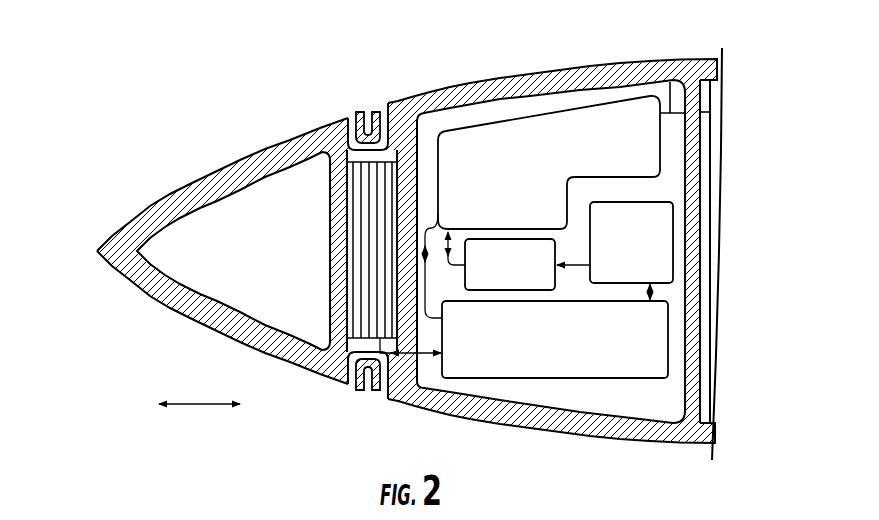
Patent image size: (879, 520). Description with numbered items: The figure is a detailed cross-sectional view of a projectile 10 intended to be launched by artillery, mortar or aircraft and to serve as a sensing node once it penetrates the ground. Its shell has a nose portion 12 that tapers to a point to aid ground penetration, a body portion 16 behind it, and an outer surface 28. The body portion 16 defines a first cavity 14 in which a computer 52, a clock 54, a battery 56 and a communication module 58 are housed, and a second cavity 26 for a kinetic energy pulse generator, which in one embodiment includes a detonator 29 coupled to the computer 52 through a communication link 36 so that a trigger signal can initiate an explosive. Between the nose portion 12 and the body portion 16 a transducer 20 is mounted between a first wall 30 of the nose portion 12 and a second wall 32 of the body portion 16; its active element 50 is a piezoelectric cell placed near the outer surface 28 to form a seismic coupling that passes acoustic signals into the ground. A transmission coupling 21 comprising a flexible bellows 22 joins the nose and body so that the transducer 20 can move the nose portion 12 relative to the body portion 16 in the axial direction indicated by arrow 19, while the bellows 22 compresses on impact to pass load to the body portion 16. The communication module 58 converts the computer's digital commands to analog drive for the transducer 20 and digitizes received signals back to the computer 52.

The projectile 10 is at (174, 142).
The nose portion 12 is at (163, 305).
The first cavity 14 is at (660, 412).
The body portion 16 is at (542, 433).
The arrow 19 is at (197, 407).
The transducer 20 is at (377, 265).
The transmission coupling 21 is at (368, 400).
The bellows 22 is at (376, 106).
The second cavity 26 is at (710, 383).
The outer surface 28 is at (273, 140).
The detonator 29 is at (712, 118).
The first wall 30 is at (327, 312).
The second wall 32 is at (413, 412).
The communication link 36 is at (672, 82).
The active element 50 is at (356, 192).
The computer 52 is at (625, 108).
The clock 54 is at (480, 253).
The battery 56 is at (665, 222).
The communication module 58 is at (608, 368).